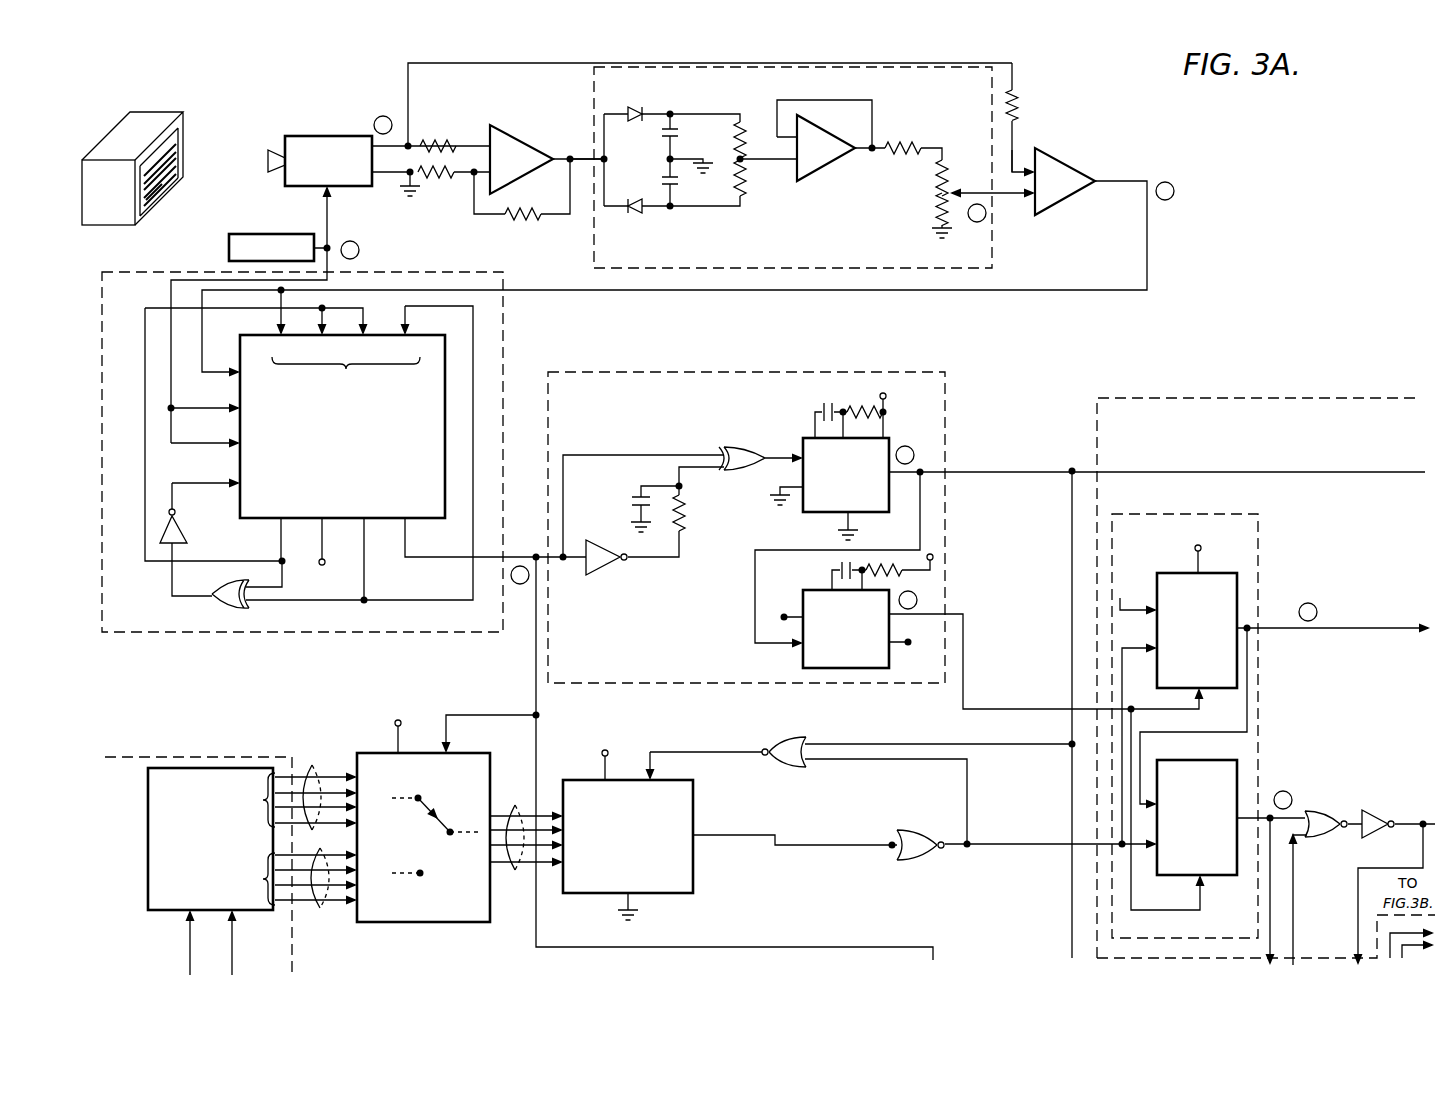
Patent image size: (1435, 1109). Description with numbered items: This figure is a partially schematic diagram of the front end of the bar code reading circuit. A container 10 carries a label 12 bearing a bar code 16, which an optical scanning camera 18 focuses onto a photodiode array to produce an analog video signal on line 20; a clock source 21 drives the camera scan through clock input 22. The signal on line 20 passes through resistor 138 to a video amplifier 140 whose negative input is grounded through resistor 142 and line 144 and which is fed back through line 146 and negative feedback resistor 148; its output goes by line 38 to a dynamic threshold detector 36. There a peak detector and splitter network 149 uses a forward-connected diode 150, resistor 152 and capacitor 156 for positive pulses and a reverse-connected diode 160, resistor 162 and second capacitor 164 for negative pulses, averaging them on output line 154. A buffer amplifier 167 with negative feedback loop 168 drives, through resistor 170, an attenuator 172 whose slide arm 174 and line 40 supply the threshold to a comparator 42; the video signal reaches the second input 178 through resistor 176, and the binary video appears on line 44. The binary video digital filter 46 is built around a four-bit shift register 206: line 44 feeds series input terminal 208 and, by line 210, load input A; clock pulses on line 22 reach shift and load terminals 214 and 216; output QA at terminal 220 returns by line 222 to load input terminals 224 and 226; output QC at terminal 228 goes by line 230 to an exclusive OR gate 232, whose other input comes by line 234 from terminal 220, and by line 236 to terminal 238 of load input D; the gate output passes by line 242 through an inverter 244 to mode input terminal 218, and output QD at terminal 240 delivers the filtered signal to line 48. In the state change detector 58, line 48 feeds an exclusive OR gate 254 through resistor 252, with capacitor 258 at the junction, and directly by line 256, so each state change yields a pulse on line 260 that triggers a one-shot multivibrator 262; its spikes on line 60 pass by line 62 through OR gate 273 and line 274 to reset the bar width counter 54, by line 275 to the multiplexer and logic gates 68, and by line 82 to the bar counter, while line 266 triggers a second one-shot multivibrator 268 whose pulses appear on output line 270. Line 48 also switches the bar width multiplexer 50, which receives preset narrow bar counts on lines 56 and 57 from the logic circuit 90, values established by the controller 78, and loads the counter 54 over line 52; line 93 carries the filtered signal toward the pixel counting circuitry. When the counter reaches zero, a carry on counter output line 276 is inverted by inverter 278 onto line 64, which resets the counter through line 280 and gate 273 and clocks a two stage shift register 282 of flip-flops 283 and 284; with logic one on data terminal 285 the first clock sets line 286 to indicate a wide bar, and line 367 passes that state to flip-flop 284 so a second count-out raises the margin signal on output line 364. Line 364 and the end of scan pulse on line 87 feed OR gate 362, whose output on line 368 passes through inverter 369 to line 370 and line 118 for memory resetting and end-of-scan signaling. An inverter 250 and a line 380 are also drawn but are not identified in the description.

The container 10 is at (143, 112).
The label 12 is at (178, 136).
The bar code 16 is at (148, 212).
The optical scanning camera 18 is at (318, 136).
The line 20 is at (377, 143).
The clock source 21 is at (248, 234).
The clock input 22 is at (330, 232).
The dynamic threshold detector 36 is at (594, 262).
The line 38 is at (573, 152).
The line 40 is at (1008, 200).
The comparator 42 is at (1074, 176).
The line 44 is at (1133, 181).
The binary video digital filter 46 is at (505, 326).
The line 48 is at (510, 555).
The bar width multiplexer circuit 50 is at (480, 753).
The line 52 is at (515, 870).
The bar width counter 54 is at (672, 895).
The line 56 is at (312, 768).
The line 57 is at (320, 904).
The state change detector 58 is at (545, 455).
The line 60 is at (970, 470).
The line 62 is at (1005, 745).
The line 64 is at (992, 846).
The multiplexer and logic gates 68 is at (1178, 398).
The controller 78 is at (182, 742).
The line 82 is at (1072, 822).
The line 87 is at (1295, 945).
The logic circuit 90 is at (148, 897).
The line 93 is at (540, 950).
The line 118 is at (1358, 902).
The resistor 138 is at (439, 132).
The video amplifier 140 is at (522, 135).
The resistor 142 is at (446, 180).
The line 144 is at (428, 192).
The line 146 is at (486, 216).
The negative feedback resistor 148 is at (512, 214).
The peak detector and splitter network 149 is at (682, 108).
The forward-connected diode 150 is at (630, 111).
The resistor 152 is at (738, 136).
The peak detector network output line 154 is at (756, 164).
The capacitor 156 is at (662, 133).
The reverse-connected diode 160 is at (645, 212).
The resistor 162 is at (697, 182).
The second capacitor 164 is at (662, 180).
The buffer amplifier 167 is at (822, 160).
The negative feedback loop 168 is at (813, 100).
The resistor 170 is at (892, 142).
The attenuator 172 is at (938, 188).
The potentiometer slide arm 174 is at (974, 190).
The resistor 176 is at (1018, 96).
The second input 178 is at (1013, 168).
The four-bit shift register 206 is at (450, 360).
The series input terminal 208 is at (218, 372).
The line 210 is at (279, 322).
The shift input terminal 214 is at (209, 407).
The load input terminal 216 is at (209, 442).
The mode input terminal 218 is at (211, 480).
The output terminal 220 is at (281, 546).
The line 222 is at (145, 556).
The load input terminal 224 is at (324, 306).
The load input terminal 226 is at (365, 306).
The terminal 228 is at (340, 541).
The line 230 is at (292, 602).
The exclusive OR gate 232 is at (216, 605).
The line 234 is at (284, 584).
The line 236 is at (385, 600).
The terminal 238 is at (406, 322).
The terminal 240 is at (418, 552).
The line 242 is at (172, 582).
The inverter 244 is at (188, 526).
The inverter 250 is at (608, 567).
The resistor 252 is at (686, 506).
The exclusive OR gate 254 is at (746, 447).
The line 256 is at (592, 443).
The capacitor 258 is at (630, 496).
The line 260 is at (773, 455).
The one-shot multivibrator 262 is at (884, 434).
The line 266 is at (755, 592).
The second one-shot multivibrator 268 is at (806, 590).
The output line 270 is at (960, 614).
The OR gate 273 is at (793, 770).
The line 274 is at (658, 748).
The line 275 is at (1072, 468).
The counter output line 276 is at (845, 842).
The inverter 278 is at (924, 861).
The line 280 is at (990, 805).
The two stage shift register 282 is at (1255, 526).
The flip-flop 283 is at (1215, 573).
The flip-flop 284 is at (1186, 762).
The data terminal 285 is at (1130, 598).
The line 286 is at (1283, 634).
The OR gate 362 is at (1318, 813).
The output line 364 is at (1256, 812).
The line 367 is at (1153, 734).
The line 368 is at (1362, 812).
The inverter 369 is at (1370, 832).
The line 370 is at (1398, 820).
The feedback line 380 is at (1273, 876).